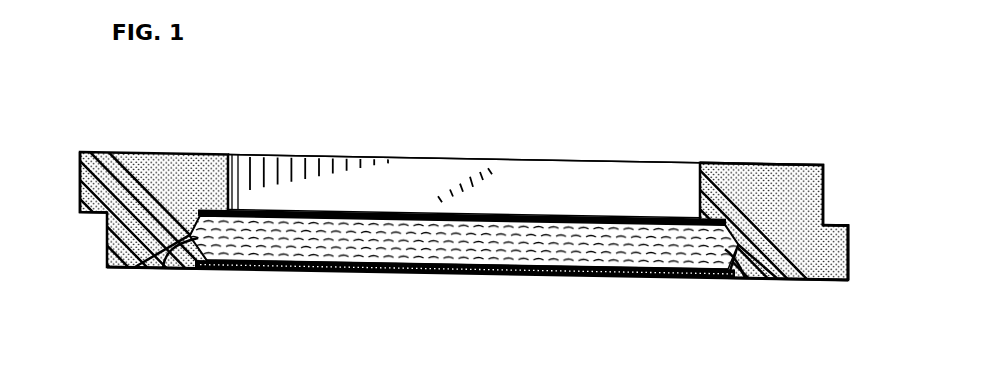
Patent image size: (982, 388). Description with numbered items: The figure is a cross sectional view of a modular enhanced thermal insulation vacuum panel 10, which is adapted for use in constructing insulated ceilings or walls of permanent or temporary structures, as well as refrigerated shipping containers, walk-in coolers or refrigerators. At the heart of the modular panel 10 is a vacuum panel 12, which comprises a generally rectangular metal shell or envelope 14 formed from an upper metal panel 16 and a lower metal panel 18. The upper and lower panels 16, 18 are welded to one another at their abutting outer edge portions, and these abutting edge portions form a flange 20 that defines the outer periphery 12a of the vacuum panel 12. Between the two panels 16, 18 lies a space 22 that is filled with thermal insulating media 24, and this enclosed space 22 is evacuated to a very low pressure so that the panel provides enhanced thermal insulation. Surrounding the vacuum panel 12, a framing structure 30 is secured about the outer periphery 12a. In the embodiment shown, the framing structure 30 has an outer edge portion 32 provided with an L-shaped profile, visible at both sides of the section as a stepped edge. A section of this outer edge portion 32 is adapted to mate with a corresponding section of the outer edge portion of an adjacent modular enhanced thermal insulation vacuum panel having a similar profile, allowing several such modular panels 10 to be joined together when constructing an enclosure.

The modular enhanced thermal insulation vacuum panel 10 is at (713, 102).
The vacuum panel 12 is at (502, 198).
The outer periphery 12a is at (137, 267).
The metal shell 14 is at (394, 210).
The upper metal panel 16 is at (583, 215).
The lower metal panel 18 is at (572, 278).
The flange 20 is at (163, 267).
The space 22 is at (334, 248).
The thermal insulating media 24 is at (446, 252).
The framing structure 30 is at (783, 165).
The outer edge portion 32 is at (79, 184).